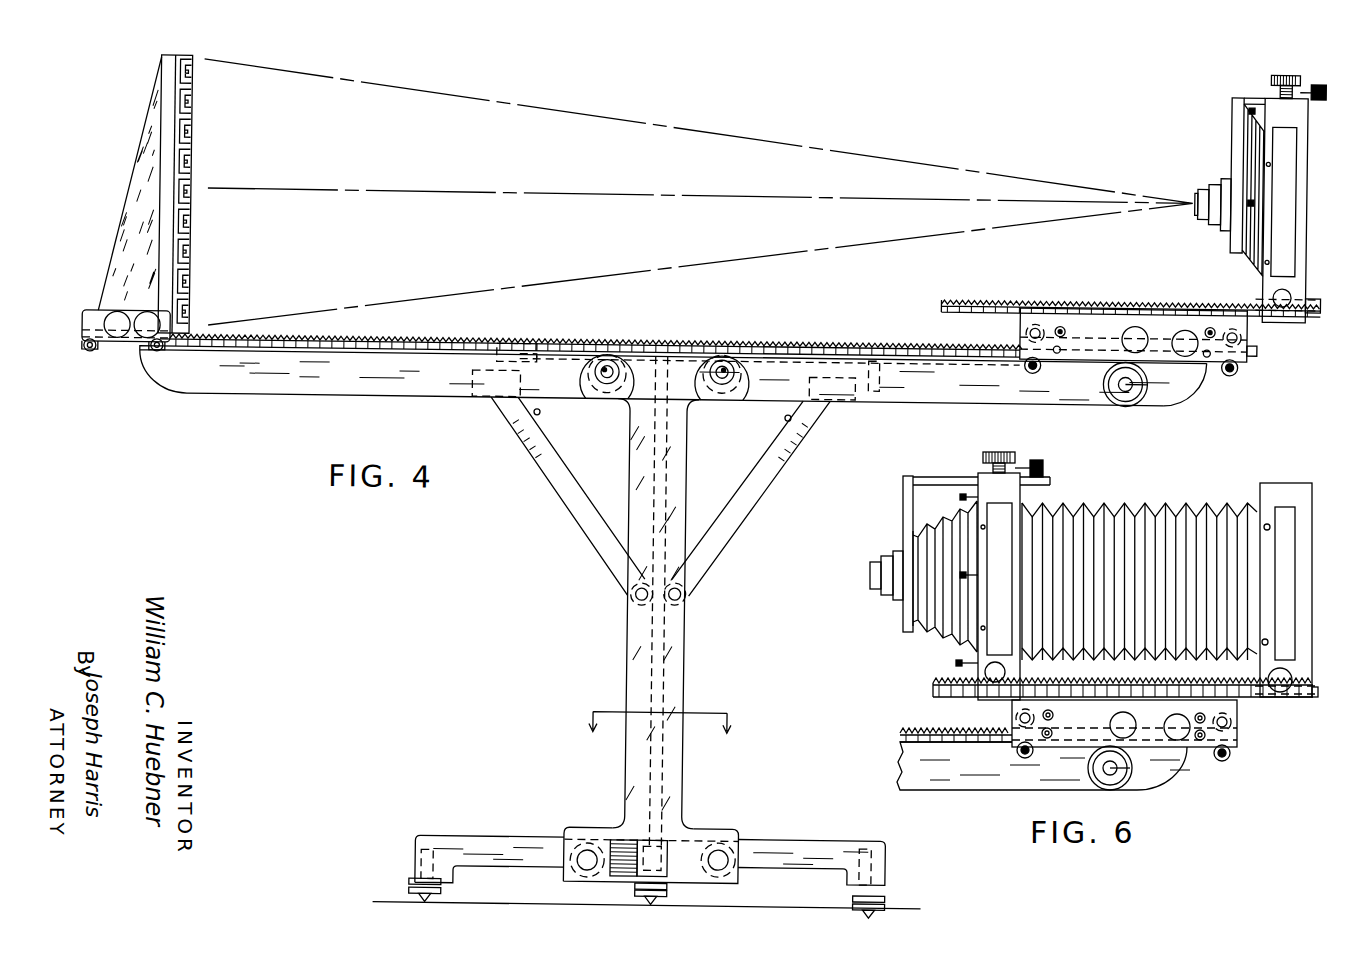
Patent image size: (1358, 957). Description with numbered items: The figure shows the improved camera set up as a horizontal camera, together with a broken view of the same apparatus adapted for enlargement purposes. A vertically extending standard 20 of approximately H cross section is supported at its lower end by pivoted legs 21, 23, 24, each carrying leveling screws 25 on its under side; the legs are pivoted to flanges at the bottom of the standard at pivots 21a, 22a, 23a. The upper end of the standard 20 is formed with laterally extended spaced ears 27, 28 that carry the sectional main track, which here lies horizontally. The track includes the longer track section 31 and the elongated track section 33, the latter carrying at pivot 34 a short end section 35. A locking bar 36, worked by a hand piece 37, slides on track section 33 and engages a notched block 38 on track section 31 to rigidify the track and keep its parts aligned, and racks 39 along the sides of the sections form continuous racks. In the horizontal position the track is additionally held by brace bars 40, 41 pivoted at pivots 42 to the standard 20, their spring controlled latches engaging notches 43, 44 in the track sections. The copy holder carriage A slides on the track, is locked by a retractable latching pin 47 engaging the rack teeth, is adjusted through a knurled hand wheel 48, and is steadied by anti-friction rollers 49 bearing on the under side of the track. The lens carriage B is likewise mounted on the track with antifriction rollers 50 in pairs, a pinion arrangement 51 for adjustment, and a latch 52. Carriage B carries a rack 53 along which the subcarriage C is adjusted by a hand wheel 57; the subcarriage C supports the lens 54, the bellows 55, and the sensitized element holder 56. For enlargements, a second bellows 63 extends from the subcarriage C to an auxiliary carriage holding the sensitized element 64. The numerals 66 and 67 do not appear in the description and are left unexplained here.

In FIG. 4, the copy holder carriage A is at (130, 214).
In FIG. 4, the lens carriage B is at (1088, 306).
In FIG. 6, the lens carriage B is at (1124, 723).
In FIG. 4, the subcarriage C is at (1300, 183).
In FIG. 6, the subcarriage C is at (1015, 503).
In FIG. 4, the standard 20 is at (690, 764).
In FIG. 4, the leg 21 is at (892, 836).
In FIG. 4, the pivot 21a is at (592, 844).
In FIG. 4, the pivot 22a is at (636, 876).
In FIG. 4, the leg 23 is at (424, 833).
In FIG. 4, the pivot 23a is at (735, 846).
In FIG. 4, the leg 24 is at (672, 834).
In FIG. 4, the leveling screws 25 is at (416, 880).
In FIG. 4, the ear 27 is at (603, 382).
In FIG. 4, the ear 28 is at (728, 380).
In FIG. 4, the track section 31 is at (673, 376).
In FIG. 4, the track section 33 is at (934, 388).
In FIG. 6, the track section 33 is at (1043, 766).
In FIG. 4, the pivot 34 is at (1130, 380).
In FIG. 6, the pivot 34 is at (1103, 768).
In FIG. 4, the end section 35 is at (1193, 376).
In FIG. 6, the end section 35 is at (1168, 778).
In FIG. 4, the locking bar 36 is at (535, 352).
In FIG. 4, the hand piece 37 is at (885, 380).
In FIG. 4, the notched block 38 is at (505, 344).
In FIG. 6, the racks 39 is at (918, 730).
In FIG. 4, the brace bar 40 is at (568, 490).
In FIG. 4, the brace bar 41 is at (765, 494).
In FIG. 4, the pivots 42 is at (638, 597).
In FIG. 4, the notch 43 is at (486, 394).
In FIG. 4, the notch 44 is at (840, 393).
In FIG. 4, the latching pin 47 is at (112, 315).
In FIG. 4, the hand wheel 48 is at (144, 319).
In FIG. 4, the anti-friction rollers 49 is at (155, 352).
In FIG. 4, the antifriction rollers 50 is at (1030, 358).
In FIG. 6, the antifriction rollers 50 is at (1020, 755).
In FIG. 4, the pinion arrangement 51 is at (1139, 316).
In FIG. 6, the pinion arrangement 51 is at (1145, 719).
In FIG. 4, the latch 52 is at (1190, 318).
In FIG. 6, the latch 52 is at (1180, 738).
In FIG. 4, the rack 53 is at (1003, 291).
In FIG. 6, the rack 53 is at (1157, 690).
In FIG. 4, the lens 54 is at (1194, 186).
In FIG. 6, the lens 54 is at (880, 563).
In FIG. 4, the bellows 55 is at (1241, 140).
In FIG. 6, the bellows 55 is at (957, 521).
In FIG. 4, the sensitized element holder 56 is at (1292, 163).
In FIG. 4, the hand wheel 57 is at (1292, 284).
In FIG. 6, the hand wheel 57 is at (1006, 672).
In FIG. 6, the second bellows 63 is at (1205, 500).
In FIG. 6, the sensitized element 64 is at (1290, 600).
In FIG. 4, the rack 66 is at (392, 348).
In FIG. 6, the rack 66 is at (898, 743).
In FIG. 4, the scale 67 is at (995, 300).
In FIG. 6, the scale 67 is at (933, 691).